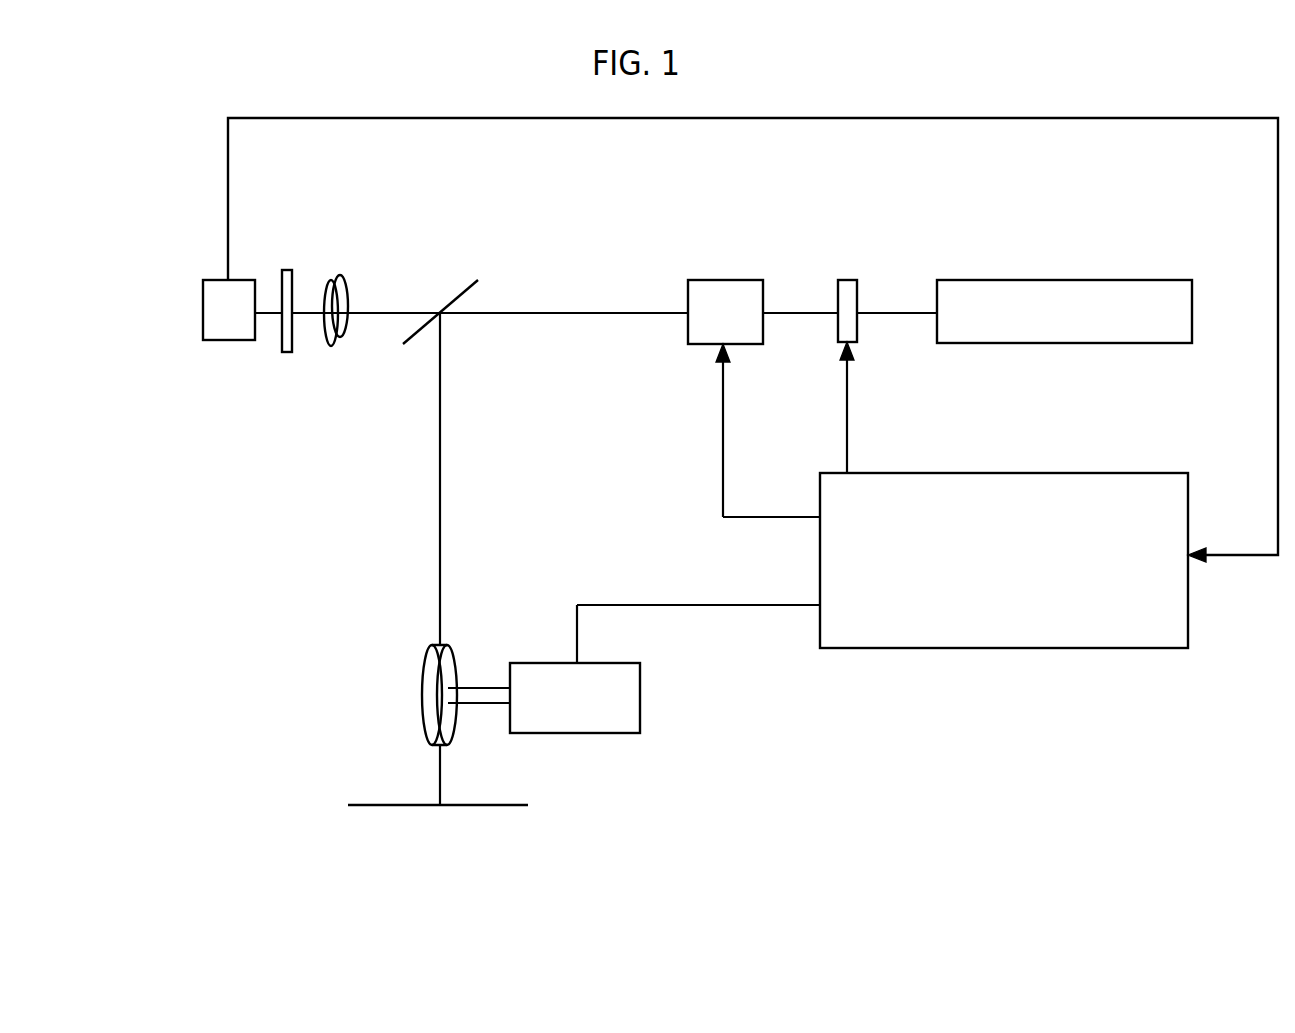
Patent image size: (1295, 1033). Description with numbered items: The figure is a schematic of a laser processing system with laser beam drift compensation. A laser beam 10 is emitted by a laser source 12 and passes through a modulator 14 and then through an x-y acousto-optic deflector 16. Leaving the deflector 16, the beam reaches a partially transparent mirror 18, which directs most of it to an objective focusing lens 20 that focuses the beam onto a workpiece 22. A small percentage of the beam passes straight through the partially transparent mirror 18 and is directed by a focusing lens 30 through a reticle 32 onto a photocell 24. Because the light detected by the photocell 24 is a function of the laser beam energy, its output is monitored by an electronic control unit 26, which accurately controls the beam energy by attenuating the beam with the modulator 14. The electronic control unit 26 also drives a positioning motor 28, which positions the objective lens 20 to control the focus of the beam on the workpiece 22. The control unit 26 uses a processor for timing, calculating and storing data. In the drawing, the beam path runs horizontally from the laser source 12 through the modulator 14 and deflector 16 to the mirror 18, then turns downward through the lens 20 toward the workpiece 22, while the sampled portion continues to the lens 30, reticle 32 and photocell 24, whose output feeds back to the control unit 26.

The laser beam 10 is at (905, 315).
The laser source 12 is at (1065, 280).
The modulator 14 is at (848, 280).
The x-y acousto-optic deflector 16 is at (720, 280).
The partially transparent mirror 18 is at (459, 290).
The objective focusing lens 20 is at (420, 690).
The workpiece 22 is at (470, 805).
The photocell 24 is at (210, 340).
The electronic control unit 26 is at (1010, 648).
The motor 28 is at (640, 705).
The focusing lens 30 is at (338, 338).
The reticle 32 is at (287, 270).